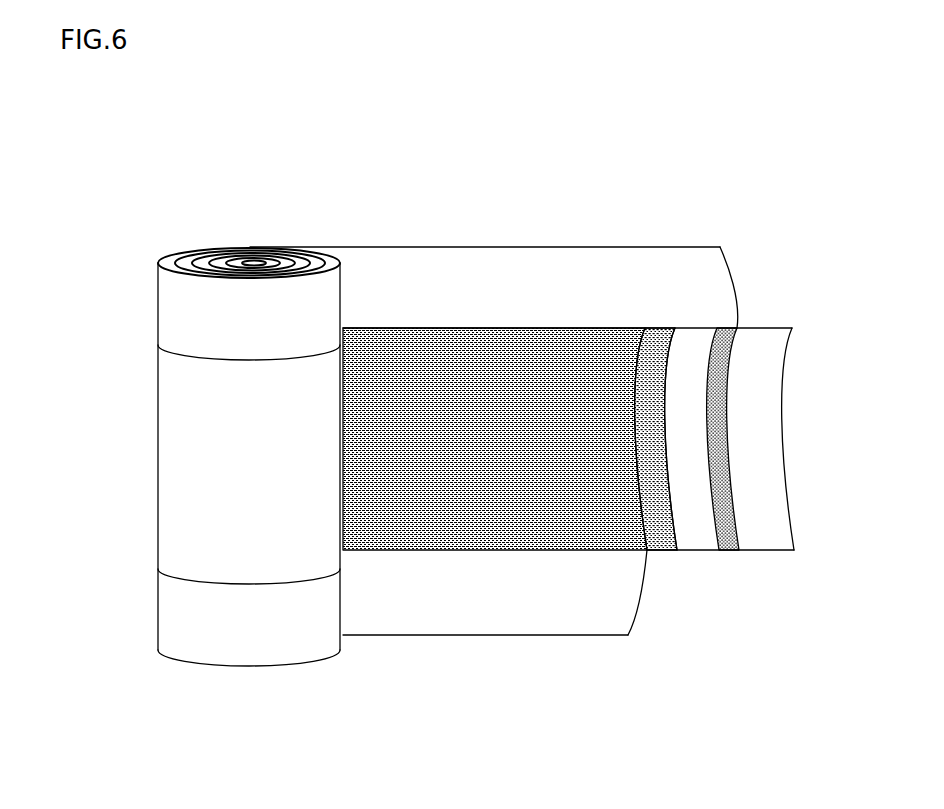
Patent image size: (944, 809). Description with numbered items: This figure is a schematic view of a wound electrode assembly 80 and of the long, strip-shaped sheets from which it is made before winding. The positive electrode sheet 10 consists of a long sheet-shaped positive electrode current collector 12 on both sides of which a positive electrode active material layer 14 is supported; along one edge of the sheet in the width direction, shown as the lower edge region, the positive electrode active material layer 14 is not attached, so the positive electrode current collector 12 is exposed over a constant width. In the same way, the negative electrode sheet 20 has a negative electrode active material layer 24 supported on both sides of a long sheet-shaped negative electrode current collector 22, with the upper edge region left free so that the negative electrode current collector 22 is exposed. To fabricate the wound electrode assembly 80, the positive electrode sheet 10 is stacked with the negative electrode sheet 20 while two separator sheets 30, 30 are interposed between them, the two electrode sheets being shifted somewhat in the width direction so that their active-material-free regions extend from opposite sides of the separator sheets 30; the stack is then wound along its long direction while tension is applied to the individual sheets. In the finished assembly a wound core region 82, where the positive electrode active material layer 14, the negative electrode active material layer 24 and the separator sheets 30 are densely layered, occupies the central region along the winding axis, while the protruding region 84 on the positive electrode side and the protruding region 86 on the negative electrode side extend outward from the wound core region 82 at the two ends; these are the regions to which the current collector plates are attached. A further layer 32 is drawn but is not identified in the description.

The positive electrode sheet 10 is at (411, 638).
The positive electrode current collector 12 is at (490, 620).
The positive electrode active material layer 14 is at (590, 550).
The negative electrode sheet 20 is at (472, 244).
The negative electrode current collector 22 is at (583, 258).
The negative electrode active material layer 24 is at (728, 327).
The separator sheet 30 is at (707, 548).
The functional layer 32 is at (660, 548).
The wound electrode assembly 80 is at (148, 232).
The wound core region 82 is at (182, 452).
The protruding region on the positive electrode side 84 is at (180, 612).
The protruding region on the negative electrode side 86 is at (182, 322).